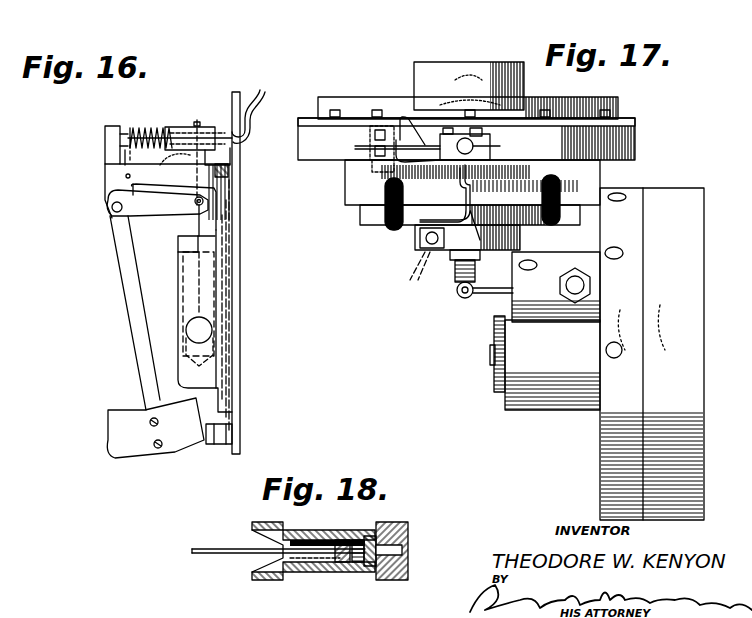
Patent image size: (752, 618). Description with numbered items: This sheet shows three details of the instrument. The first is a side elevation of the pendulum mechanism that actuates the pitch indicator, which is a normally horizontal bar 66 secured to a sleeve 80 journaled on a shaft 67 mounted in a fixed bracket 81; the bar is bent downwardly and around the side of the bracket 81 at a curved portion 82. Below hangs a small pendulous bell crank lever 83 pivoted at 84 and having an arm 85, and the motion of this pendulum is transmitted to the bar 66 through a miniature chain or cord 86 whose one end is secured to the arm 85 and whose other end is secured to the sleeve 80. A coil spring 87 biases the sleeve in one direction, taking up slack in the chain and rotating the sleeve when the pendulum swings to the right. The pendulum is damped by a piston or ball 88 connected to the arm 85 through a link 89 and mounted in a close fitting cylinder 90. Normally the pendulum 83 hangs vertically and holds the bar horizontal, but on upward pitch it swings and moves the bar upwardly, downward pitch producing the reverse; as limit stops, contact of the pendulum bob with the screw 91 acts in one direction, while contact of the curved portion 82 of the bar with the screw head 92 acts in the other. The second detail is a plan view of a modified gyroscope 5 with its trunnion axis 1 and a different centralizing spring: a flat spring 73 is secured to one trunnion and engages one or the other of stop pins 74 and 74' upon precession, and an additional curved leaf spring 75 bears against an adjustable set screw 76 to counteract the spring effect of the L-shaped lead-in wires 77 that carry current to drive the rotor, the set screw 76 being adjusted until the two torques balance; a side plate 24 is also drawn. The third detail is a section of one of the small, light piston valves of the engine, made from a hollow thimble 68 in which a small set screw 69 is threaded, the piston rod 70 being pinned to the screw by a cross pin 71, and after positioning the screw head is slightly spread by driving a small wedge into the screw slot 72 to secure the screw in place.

In FIG. 17, the trunnion axis 1 is at (466, 139).
In FIG. 17, the gyroscope casing 5 is at (492, 62).
In FIG. 17, the side plate 24 is at (610, 354).
In FIG. 16, the horizontal bar 66 is at (254, 103).
In FIG. 16, the shaft 67 is at (104, 139).
In FIG. 18, the hollow thimble 68 is at (320, 572).
In FIG. 18, the set screw 69 is at (370, 560).
In FIG. 18, the piston rod 70 is at (228, 555).
In FIG. 18, the cross pin 71 is at (330, 530).
In FIG. 18, the screw slot 72 is at (402, 550).
In FIG. 17, the flat spring 73 is at (370, 147).
In FIG. 17, the stop pin 74 is at (362, 115).
In FIG. 17, the stop pin 74' is at (371, 178).
In FIG. 17, the curved leaf spring 75 is at (400, 135).
In FIG. 17, the adjustable set screw 76 is at (440, 118).
In FIG. 17, the lead-in wires 77 is at (465, 231).
In FIG. 16, the sleeve 80 is at (210, 127).
In FIG. 16, the fixed bracket 81 is at (112, 176).
In FIG. 16, the curved portion of bar 82 is at (230, 158).
In FIG. 16, the pendulous bell crank lever 83 is at (108, 410).
In FIG. 16, the pivot 84 is at (114, 208).
In FIG. 16, the arm 85 is at (157, 204).
In FIG. 16, the chain or cord 86 is at (195, 120).
In FIG. 16, the coil spring 87 is at (130, 128).
In FIG. 16, the piston or ball 88 is at (212, 338).
In FIG. 16, the link 89 is at (205, 237).
In FIG. 16, the cylinder 90 is at (214, 300).
In FIG. 16, the screw 91 is at (210, 446).
In FIG. 16, the screw head 92 is at (238, 185).